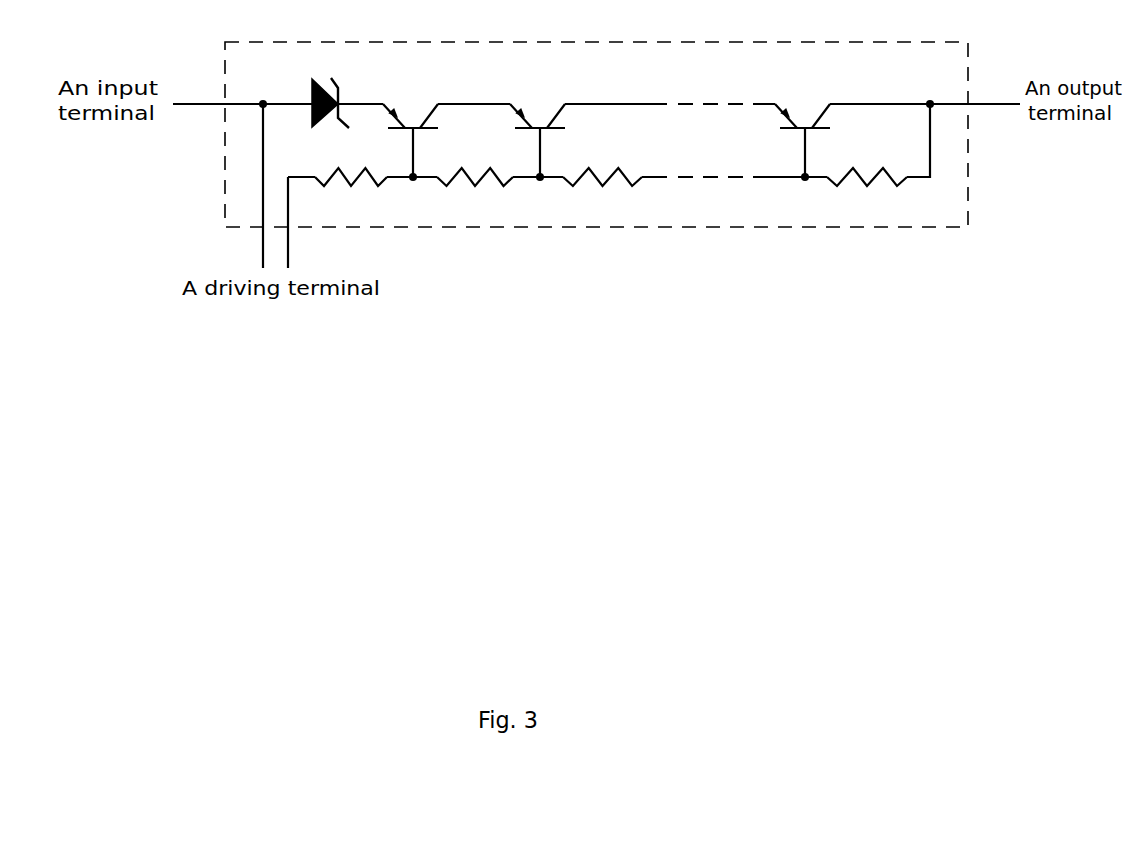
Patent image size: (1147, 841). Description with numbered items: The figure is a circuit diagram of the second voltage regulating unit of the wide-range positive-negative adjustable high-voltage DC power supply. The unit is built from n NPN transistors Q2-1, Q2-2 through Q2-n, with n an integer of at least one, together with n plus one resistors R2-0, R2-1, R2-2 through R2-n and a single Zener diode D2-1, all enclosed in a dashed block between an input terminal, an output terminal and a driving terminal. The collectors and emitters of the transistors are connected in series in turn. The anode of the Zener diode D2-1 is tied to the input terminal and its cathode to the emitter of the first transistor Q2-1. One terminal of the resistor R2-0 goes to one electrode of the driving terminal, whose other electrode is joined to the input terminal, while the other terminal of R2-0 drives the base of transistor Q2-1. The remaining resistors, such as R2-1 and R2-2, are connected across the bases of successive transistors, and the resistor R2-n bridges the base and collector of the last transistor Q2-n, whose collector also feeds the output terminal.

The Zener diode D2-1 is at (327, 88).
The first transistor Q2-1 is at (410, 121).
The second transistor Q2-2 is at (537, 121).
The n-th transistor Q2-n is at (802, 121).
The resistor R2-0 is at (350, 165).
The resistor R2-1 is at (475, 165).
The resistor R2-2 is at (602, 165).
The resistor R2-n is at (867, 165).